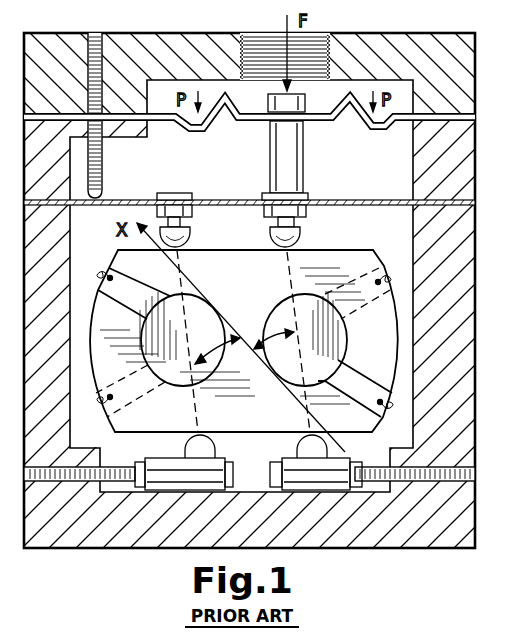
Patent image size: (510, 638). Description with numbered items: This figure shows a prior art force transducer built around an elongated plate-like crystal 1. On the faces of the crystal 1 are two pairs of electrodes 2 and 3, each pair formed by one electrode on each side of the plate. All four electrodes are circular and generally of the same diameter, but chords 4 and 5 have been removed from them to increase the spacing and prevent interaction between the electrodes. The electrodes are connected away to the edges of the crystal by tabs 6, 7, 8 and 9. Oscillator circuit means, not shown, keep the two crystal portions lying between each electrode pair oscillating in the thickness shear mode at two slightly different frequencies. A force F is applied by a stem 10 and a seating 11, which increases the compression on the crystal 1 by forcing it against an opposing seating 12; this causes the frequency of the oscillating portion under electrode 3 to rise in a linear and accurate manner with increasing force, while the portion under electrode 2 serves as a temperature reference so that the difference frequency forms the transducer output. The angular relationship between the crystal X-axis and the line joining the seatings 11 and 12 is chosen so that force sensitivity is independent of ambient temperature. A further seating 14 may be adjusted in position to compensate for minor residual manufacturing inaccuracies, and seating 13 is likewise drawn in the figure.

The crystal 1 is at (346, 250).
The electrode pair 2 is at (214, 305).
The electrode pair 3 is at (283, 300).
The chord 4 is at (231, 352).
The chord 5 is at (258, 330).
The tab 6 is at (132, 277).
The tab 7 is at (136, 398).
The tab 8 is at (358, 381).
The tab 9 is at (356, 288).
The stem 10 is at (306, 165).
The seating 11 is at (302, 238).
The seating 12 is at (297, 452).
The left upper pivot bolt 13 is at (192, 238).
The seating 14 is at (185, 450).